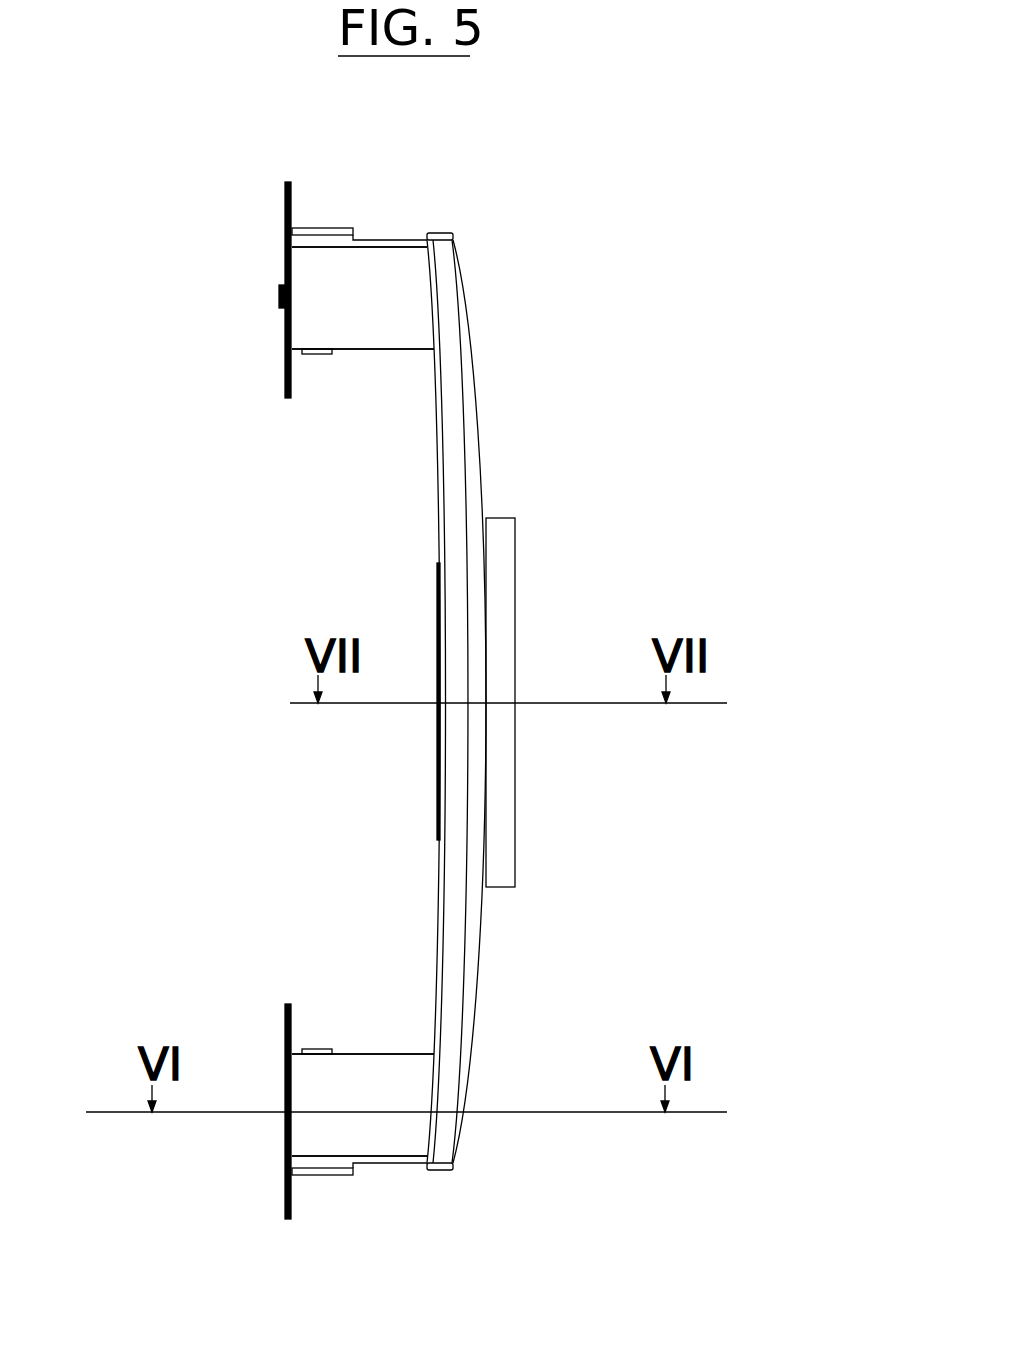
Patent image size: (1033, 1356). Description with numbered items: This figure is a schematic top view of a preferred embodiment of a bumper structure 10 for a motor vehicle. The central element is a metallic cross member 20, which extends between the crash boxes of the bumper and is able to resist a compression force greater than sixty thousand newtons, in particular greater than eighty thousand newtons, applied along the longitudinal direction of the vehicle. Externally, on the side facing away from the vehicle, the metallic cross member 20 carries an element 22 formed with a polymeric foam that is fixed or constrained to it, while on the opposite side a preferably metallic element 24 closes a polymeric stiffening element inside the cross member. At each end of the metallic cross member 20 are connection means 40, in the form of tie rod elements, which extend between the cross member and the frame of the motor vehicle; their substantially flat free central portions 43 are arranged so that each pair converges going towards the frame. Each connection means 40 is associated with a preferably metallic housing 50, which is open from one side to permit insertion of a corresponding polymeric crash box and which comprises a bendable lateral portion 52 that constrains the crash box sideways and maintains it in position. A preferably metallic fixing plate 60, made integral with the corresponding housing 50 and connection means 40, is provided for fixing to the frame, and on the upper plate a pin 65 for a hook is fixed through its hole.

The bumper structure 10 is at (612, 198).
The metallic cross member 20 is at (479, 439).
The element formed with a polymeric foam 22 is at (510, 767).
The element 24 is at (438, 780).
The connection means 40 is at (387, 270).
The free central portion 43 is at (365, 278).
The housing 50 is at (323, 237).
The bendable lateral portion 52 is at (320, 355).
The fixing plate 60 is at (285, 268).
The pin 65 is at (279, 298).